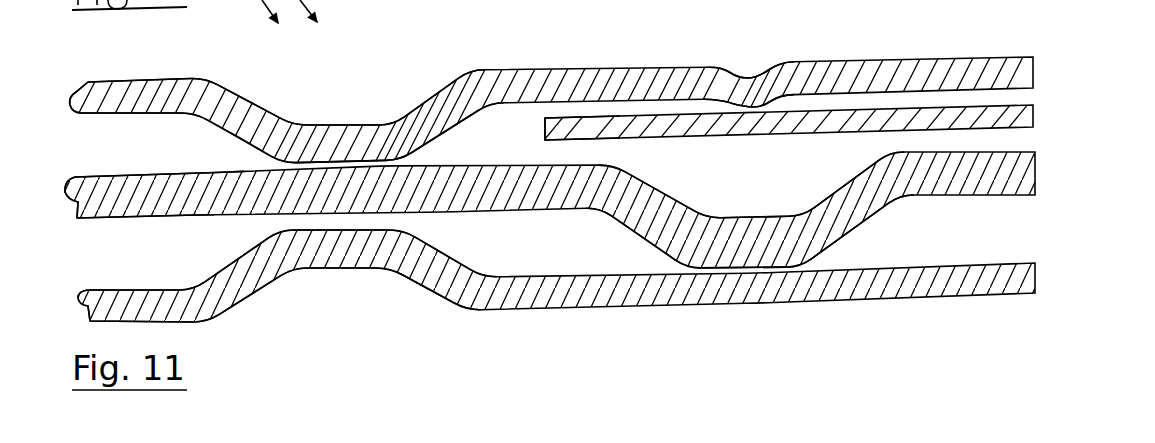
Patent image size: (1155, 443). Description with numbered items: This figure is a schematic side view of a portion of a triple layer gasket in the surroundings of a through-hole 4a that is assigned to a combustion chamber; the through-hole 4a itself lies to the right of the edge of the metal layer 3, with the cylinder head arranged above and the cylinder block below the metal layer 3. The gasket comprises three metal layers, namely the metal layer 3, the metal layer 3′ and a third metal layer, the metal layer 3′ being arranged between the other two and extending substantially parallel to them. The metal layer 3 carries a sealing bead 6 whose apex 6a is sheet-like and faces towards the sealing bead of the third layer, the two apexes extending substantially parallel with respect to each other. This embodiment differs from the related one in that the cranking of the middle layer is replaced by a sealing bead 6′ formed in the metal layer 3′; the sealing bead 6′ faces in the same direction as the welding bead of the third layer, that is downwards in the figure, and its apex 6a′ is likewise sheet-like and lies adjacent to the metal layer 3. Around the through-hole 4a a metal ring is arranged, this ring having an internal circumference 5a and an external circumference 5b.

The metal layer 3 is at (142, 295).
The metal layer 3′ is at (117, 212).
The sealing bead 6 is at (367, 322).
The apex of the sealing bead 6a is at (317, 262).
The sealing bead 6′ is at (803, 180).
The apex of the sealing bead 6a′ is at (725, 223).
The internal circumference 5a is at (1037, 113).
The external circumference 5b is at (543, 127).
The through-hole 4a is at (1100, 190).